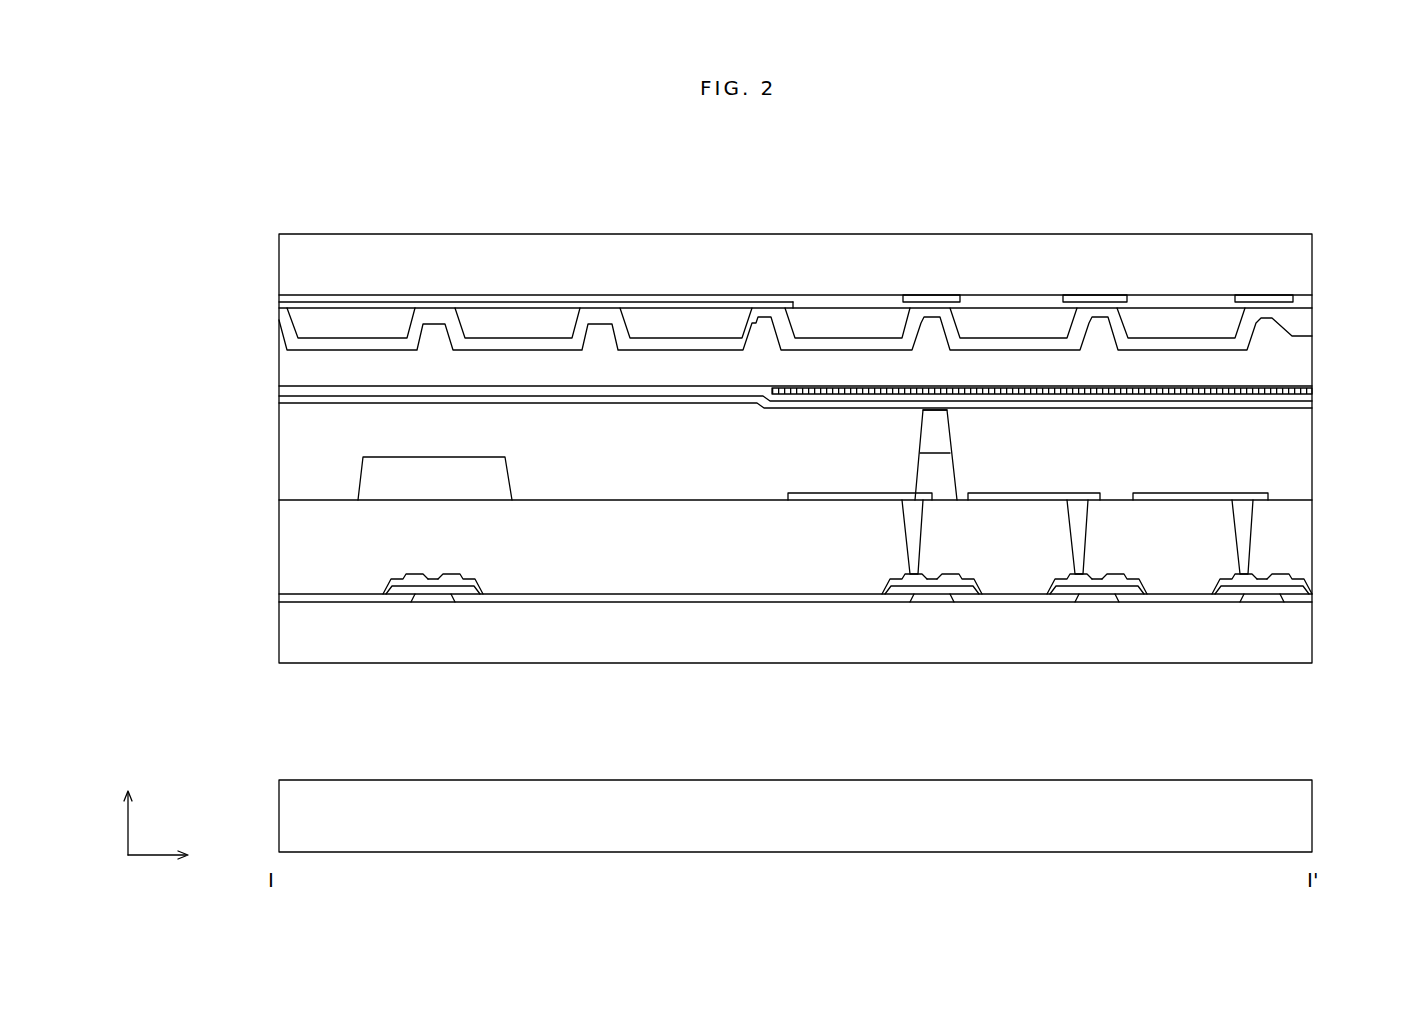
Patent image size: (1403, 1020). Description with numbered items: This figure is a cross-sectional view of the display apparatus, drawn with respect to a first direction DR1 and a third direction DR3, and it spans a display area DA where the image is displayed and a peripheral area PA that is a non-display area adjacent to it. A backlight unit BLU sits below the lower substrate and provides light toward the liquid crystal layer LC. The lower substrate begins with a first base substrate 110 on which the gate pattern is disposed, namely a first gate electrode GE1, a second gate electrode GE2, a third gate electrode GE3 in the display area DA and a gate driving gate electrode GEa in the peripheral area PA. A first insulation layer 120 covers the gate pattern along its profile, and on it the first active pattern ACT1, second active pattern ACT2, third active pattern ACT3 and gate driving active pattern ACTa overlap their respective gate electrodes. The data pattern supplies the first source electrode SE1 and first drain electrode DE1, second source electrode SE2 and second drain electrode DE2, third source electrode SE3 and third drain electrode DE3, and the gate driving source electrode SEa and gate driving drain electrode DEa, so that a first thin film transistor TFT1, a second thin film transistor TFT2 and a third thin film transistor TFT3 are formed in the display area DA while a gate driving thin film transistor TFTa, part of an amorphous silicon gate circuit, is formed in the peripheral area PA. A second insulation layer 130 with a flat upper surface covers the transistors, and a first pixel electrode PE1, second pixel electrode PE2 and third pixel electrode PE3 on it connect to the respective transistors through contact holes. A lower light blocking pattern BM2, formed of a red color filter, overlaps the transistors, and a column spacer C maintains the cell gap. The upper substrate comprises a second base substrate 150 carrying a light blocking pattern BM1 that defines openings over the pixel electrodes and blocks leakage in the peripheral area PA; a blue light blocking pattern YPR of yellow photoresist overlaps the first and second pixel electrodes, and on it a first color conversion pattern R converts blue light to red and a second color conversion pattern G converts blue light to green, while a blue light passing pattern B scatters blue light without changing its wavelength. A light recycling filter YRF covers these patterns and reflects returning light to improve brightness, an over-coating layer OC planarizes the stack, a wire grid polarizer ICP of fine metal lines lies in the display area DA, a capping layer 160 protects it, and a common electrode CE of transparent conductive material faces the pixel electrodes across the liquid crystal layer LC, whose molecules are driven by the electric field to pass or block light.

The second base substrate 150 is at (1307, 253).
The peripheral area PA is at (775, 184).
The display area DA is at (1310, 184).
The light blocking pattern BM1 is at (523, 299).
The blue light blocking pattern YPR is at (287, 305).
The light recycling filter YRF is at (1283, 320).
The blue light passing pattern B is at (598, 324).
The second color conversion pattern G is at (766, 324).
The first color conversion pattern R is at (932, 324).
The over-coating layer OC is at (1307, 366).
The wire grid polarizer ICP is at (1307, 389).
The capping layer 160 is at (1307, 396).
The common electrode CE is at (1307, 405).
The liquid crystal layer LC is at (286, 450).
The lower light blocking pattern BM2 is at (368, 482).
The column spacer C is at (940, 430).
The second insulation layer 130 is at (1307, 525).
The third pixel electrode PE3 is at (808, 496).
The second pixel electrode PE2 is at (1060, 496).
The first pixel electrode PE1 is at (1193, 496).
The first insulation layer 120 is at (1307, 592).
The first base substrate 110 is at (1307, 618).
The gate driving thin film transistor TFTa is at (437, 672).
The gate driving drain electrode DEa is at (403, 595).
The gate driving gate electrode GEa is at (423, 603).
The gate driving source electrode SEa is at (465, 588).
The gate driving active pattern ACTa is at (435, 587).
The third thin film transistor TFT3 is at (936, 672).
The third drain electrode DE3 is at (902, 595).
The third gate electrode GE3 is at (922, 603).
The third source electrode SE3 is at (964, 588).
The third active pattern ACT3 is at (934, 587).
The second thin film transistor TFT2 is at (1101, 672).
The second drain electrode DE2 is at (1067, 595).
The second gate electrode GE2 is at (1087, 603).
The second source electrode SE2 is at (1129, 588).
The second active pattern ACT2 is at (1099, 587).
The first thin film transistor TFT1 is at (1267, 672).
The first drain electrode DE1 is at (1232, 595).
The first gate electrode GE1 is at (1252, 603).
The first source electrode SE1 is at (1294, 588).
The first active pattern ACT1 is at (1264, 587).
The backlight unit BLU is at (1312, 813).
The first direction DR1 is at (186, 855).
The third direction DR3 is at (133, 809).